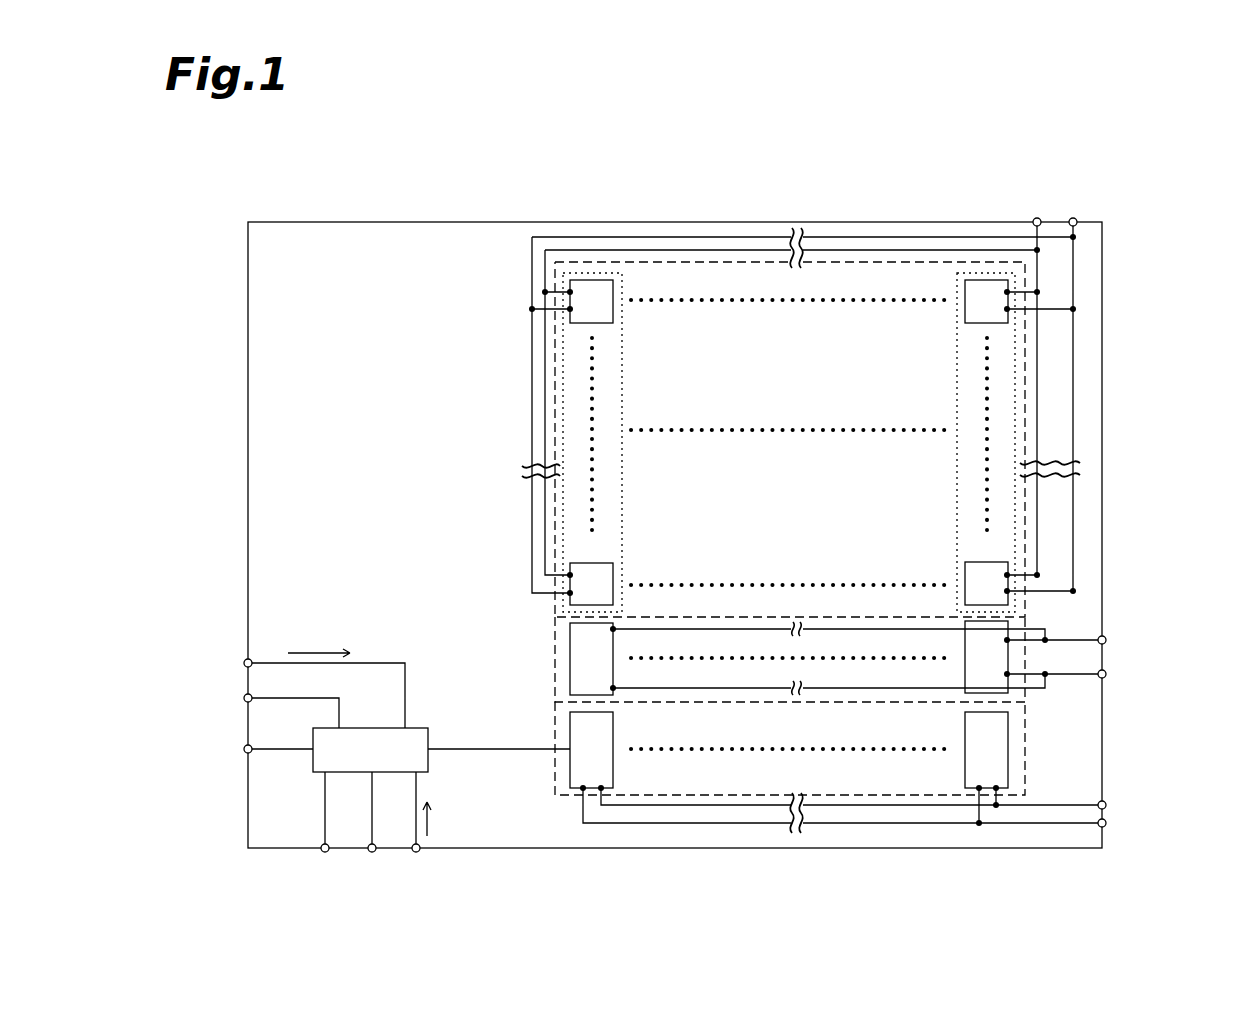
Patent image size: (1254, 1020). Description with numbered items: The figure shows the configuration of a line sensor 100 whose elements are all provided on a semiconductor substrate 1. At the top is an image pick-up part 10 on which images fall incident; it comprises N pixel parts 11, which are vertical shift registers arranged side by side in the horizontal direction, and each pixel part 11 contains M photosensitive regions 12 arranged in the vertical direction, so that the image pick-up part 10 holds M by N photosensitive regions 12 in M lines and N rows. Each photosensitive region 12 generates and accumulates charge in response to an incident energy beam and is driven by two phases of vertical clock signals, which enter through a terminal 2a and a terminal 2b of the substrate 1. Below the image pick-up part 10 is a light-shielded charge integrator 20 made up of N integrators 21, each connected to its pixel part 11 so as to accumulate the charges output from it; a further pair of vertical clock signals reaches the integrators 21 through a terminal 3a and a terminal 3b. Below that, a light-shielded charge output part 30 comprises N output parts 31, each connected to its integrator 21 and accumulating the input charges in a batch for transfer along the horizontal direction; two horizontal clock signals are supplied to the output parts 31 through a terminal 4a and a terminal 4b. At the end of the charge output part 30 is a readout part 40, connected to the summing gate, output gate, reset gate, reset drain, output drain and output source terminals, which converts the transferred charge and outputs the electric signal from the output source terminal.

The semiconductor substrate 1 is at (368, 222).
The line sensor 100 is at (800, 165).
The image pick-up part 10 is at (540, 272).
The pixel part 11 is at (594, 278).
The photosensitive region 12 is at (582, 290).
The terminal 2a is at (1037, 222).
The terminal 2b is at (1073, 222).
The charge integrator 20 is at (555, 635).
The integrator 21 is at (576, 661).
The terminal 3a is at (1102, 640).
The terminal 3b is at (1102, 674).
The charge output part 30 is at (553, 772).
The output part 31 is at (578, 775).
The terminal 4a is at (1102, 805).
The terminal 4b is at (1102, 823).
The readout part 40 is at (418, 738).